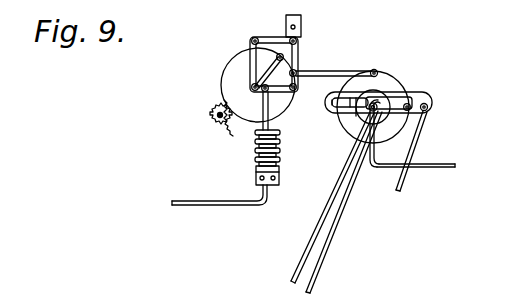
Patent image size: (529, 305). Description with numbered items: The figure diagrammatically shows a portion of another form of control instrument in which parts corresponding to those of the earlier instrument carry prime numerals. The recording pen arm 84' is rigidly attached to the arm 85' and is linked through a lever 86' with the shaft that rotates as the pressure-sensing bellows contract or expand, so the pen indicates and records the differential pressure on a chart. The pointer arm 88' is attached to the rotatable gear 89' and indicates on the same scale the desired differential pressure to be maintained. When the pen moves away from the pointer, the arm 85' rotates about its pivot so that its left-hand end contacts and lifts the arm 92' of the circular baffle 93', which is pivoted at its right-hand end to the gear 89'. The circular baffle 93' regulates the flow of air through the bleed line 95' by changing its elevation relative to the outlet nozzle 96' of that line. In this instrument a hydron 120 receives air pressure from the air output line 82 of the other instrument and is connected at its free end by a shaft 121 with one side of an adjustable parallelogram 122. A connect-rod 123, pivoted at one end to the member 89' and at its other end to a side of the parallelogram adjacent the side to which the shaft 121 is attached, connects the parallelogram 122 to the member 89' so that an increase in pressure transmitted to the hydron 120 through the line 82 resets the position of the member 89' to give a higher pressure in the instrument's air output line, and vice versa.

The adjustable parallelogram 122 is at (248, 73).
The shaft 121 is at (270, 129).
The hydron 120 is at (255, 149).
The air output line 82 is at (212, 200).
The connect-rod 123 is at (333, 58).
The rotatable gear 89' is at (385, 90).
The arm 85' is at (400, 87).
The circular baffle 93' is at (444, 118).
The lever 86' is at (427, 157).
The outlet nozzle 96' is at (370, 149).
The bleed line 95' is at (430, 154).
The arm of circular baffle 92' is at (333, 135).
The recording pen arm 84' is at (307, 197).
The pointer arm 88' is at (344, 202).